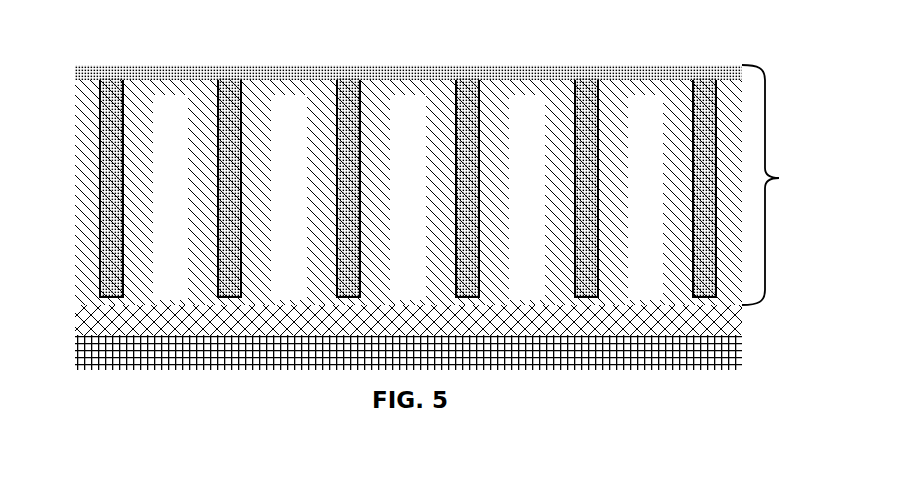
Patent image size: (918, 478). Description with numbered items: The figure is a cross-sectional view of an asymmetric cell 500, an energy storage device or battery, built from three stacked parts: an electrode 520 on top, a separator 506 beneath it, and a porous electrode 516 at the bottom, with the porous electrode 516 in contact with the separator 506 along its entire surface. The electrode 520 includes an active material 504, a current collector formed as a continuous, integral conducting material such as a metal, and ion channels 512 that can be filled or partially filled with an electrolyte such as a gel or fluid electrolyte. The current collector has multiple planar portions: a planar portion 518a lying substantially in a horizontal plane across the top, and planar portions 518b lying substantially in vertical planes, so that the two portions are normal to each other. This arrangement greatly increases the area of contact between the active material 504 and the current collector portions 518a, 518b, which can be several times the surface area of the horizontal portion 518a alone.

The asymmetric cell 500 is at (434, 237).
The active material 504 is at (88, 247).
The separator 506 is at (712, 330).
The ion channels 512 is at (288, 128).
The porous electrode 516 is at (665, 343).
The planar portion of current collector 518a is at (210, 75).
The planar portion of current collector 518b is at (468, 132).
The electrode 520 is at (793, 185).